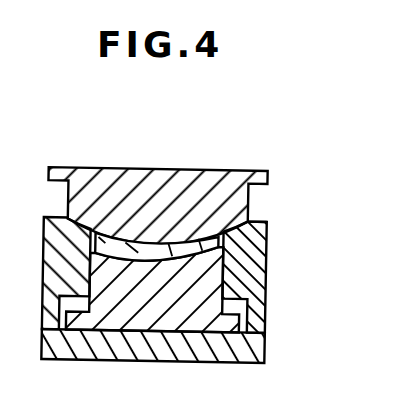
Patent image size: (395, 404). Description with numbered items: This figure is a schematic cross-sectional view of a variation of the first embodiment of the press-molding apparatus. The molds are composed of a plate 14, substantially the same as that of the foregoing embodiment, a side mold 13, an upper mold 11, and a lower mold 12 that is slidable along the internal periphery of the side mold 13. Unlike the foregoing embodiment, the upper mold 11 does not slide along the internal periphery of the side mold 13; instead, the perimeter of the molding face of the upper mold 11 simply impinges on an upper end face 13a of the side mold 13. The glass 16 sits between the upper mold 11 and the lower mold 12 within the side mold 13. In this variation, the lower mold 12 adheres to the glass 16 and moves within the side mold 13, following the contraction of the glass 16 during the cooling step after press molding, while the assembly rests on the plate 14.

The upper mold 11 is at (188, 177).
The lower mold 12 is at (212, 279).
The side mold 13 is at (256, 258).
The upper end face 13a is at (244, 213).
The plate 14 is at (252, 349).
The glass 16 is at (132, 241).